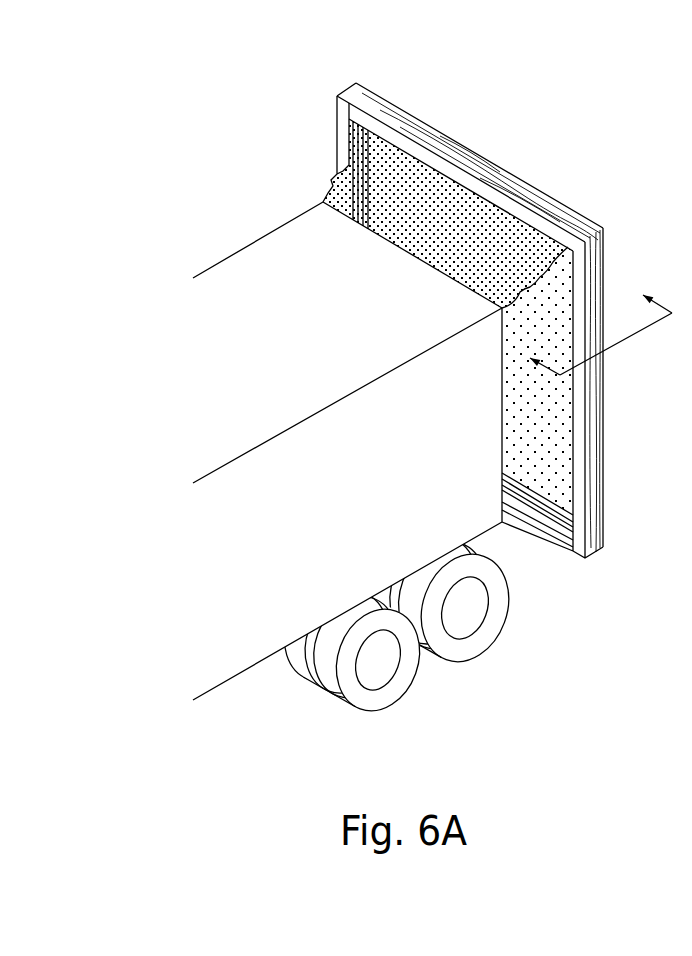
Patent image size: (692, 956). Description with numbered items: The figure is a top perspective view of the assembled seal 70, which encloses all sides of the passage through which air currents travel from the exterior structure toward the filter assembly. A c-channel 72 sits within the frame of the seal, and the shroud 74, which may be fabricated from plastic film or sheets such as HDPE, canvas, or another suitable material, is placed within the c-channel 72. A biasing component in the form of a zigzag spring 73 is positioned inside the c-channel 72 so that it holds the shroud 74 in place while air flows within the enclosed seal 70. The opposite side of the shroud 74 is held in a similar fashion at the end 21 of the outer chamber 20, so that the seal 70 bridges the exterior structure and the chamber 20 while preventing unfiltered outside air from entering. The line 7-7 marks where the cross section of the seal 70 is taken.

The outer chamber 20 is at (183, 212).
The end of outer chamber 21 is at (400, 240).
The seal 70 is at (540, 115).
The c-channel 72 is at (360, 141).
The zigzag spring 73 is at (560, 480).
The shroud 74 is at (562, 303).
The section line 7- 7 is at (595, 326).